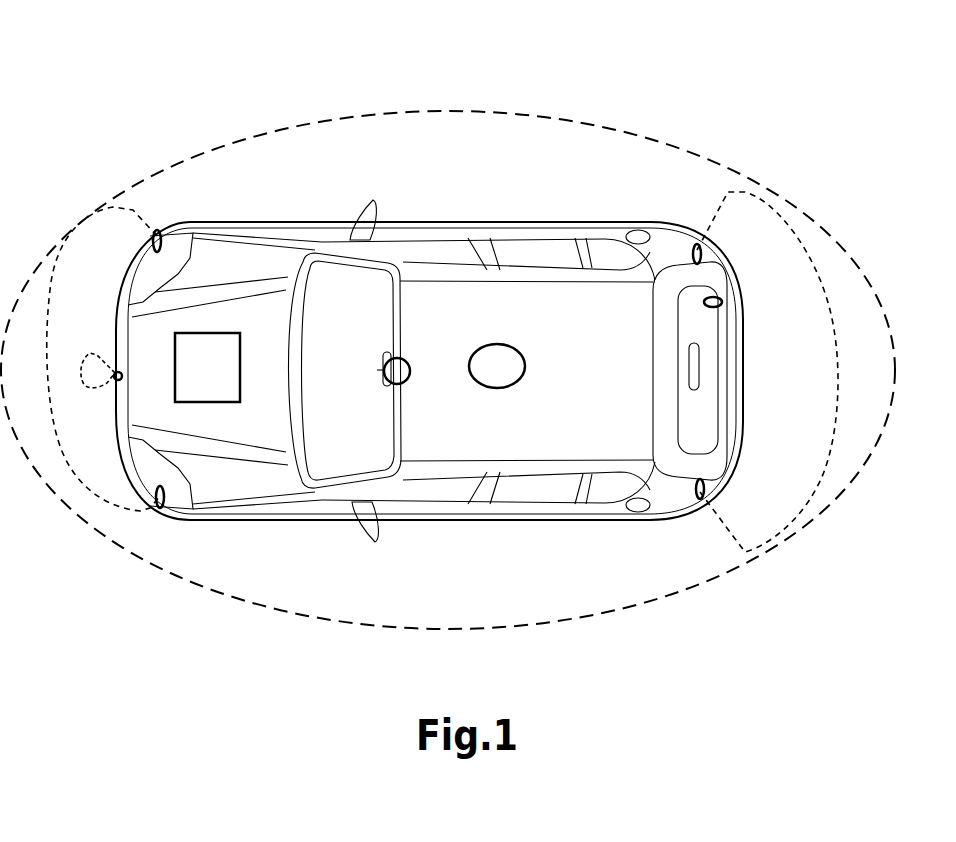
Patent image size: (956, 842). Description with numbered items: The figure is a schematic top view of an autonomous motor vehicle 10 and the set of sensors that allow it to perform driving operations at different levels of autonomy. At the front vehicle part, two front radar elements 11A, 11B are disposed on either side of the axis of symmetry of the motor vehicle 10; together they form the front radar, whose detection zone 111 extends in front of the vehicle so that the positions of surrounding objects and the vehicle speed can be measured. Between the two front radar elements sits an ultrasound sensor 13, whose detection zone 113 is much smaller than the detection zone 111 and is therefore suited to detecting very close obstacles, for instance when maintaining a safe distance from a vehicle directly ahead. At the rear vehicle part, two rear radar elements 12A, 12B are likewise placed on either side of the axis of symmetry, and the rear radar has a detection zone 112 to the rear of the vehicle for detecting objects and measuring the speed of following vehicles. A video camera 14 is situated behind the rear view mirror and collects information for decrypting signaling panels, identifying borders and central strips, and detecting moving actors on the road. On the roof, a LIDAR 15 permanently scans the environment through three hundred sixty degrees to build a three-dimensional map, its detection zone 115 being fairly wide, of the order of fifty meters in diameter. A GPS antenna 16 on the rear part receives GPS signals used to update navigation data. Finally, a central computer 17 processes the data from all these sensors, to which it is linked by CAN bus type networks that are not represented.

The motor vehicle 10 is at (235, 121).
The front radar element 11A is at (157, 231).
The front radar element 11B is at (160, 507).
The rear radar element 12A is at (697, 244).
The rear radar element 12B is at (700, 500).
The ultrasound sensor 13 is at (119, 372).
The video camera 14 is at (395, 370).
The LIDAR 15 is at (507, 360).
The GPS antenna 16 is at (719, 305).
The central computer 17 is at (207, 367).
The detection zone 111 is at (87, 228).
The detection zone 112 is at (803, 247).
The detection zone 113 is at (90, 353).
The detection zone 115 is at (590, 122).